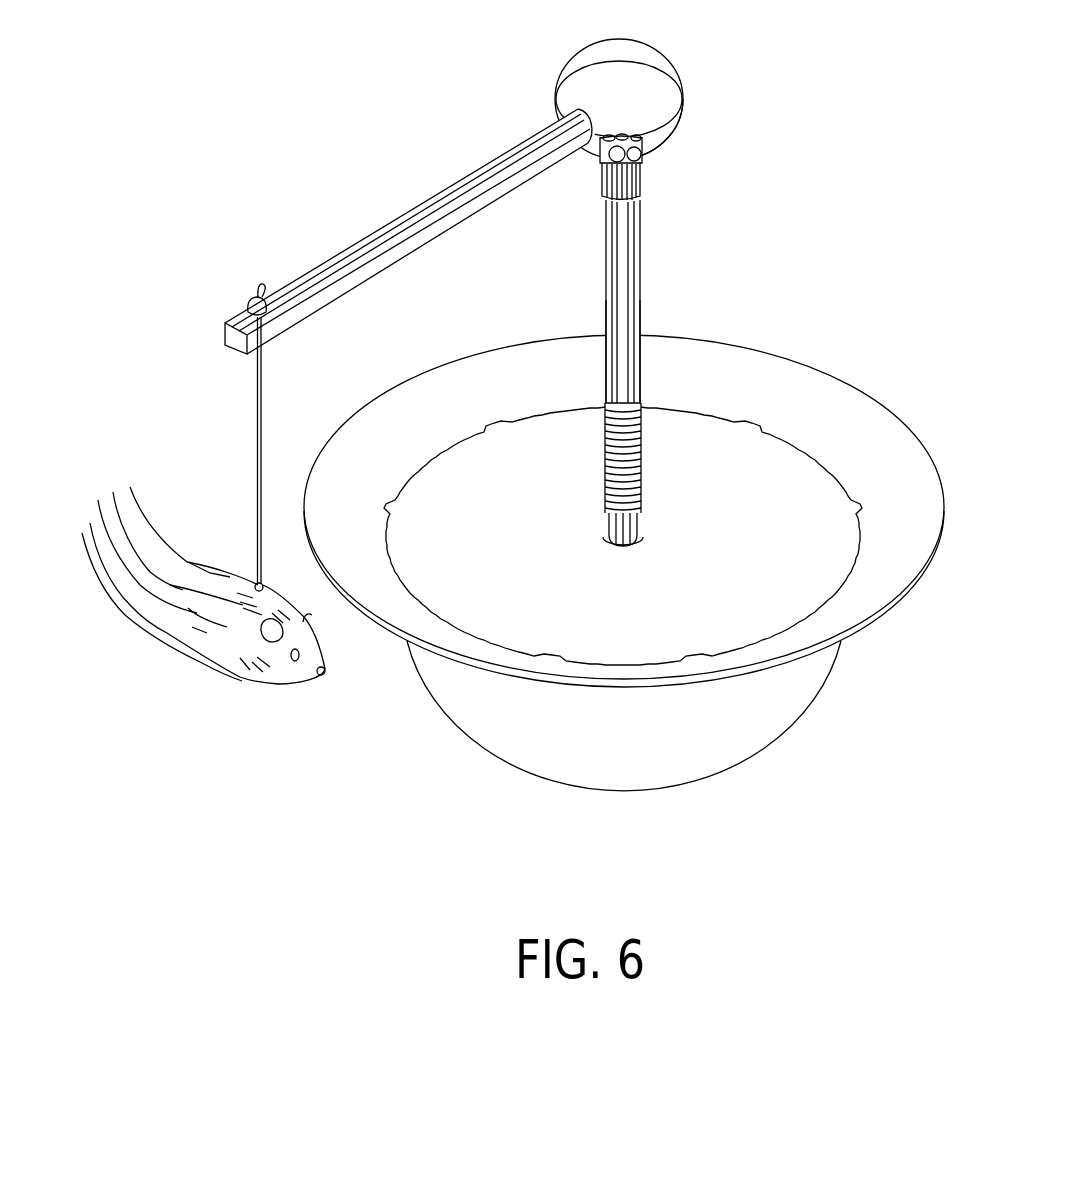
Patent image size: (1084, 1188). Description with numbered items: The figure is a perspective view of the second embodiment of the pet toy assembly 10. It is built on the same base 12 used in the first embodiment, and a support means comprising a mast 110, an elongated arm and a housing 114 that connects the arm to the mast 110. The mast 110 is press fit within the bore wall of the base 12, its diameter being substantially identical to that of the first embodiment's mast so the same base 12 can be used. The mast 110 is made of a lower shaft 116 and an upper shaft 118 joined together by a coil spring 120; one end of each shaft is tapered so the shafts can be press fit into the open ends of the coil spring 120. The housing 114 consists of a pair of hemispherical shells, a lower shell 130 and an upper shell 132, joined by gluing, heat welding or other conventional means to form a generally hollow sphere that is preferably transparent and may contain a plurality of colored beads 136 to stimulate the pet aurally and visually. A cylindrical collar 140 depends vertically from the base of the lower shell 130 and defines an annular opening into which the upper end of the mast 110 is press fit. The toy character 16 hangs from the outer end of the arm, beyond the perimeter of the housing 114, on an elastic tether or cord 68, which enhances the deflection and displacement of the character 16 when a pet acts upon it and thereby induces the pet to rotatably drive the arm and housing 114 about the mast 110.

The pet toy assembly 10 is at (298, 152).
The base 12 is at (806, 694).
The toy character 16 is at (220, 673).
The elastic tether or cord 68 is at (255, 442).
The mast 110 is at (640, 283).
The housing 114 is at (683, 82).
The lower shaft 116 is at (643, 527).
The upper shaft 118 is at (606, 300).
The coil spring 120 is at (606, 450).
The lower shell 130 is at (675, 145).
The upper hemispherical shell 132 is at (652, 43).
The colored beads 136 is at (642, 153).
The cylindrical collar 140 is at (597, 187).